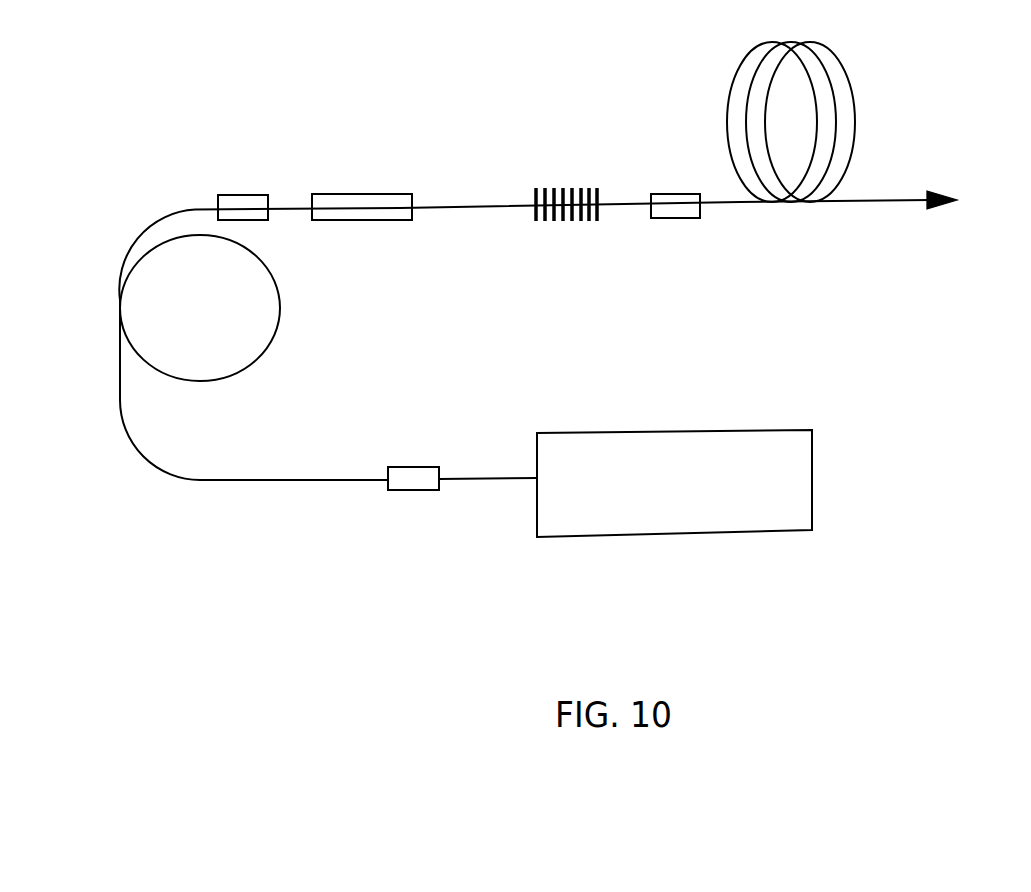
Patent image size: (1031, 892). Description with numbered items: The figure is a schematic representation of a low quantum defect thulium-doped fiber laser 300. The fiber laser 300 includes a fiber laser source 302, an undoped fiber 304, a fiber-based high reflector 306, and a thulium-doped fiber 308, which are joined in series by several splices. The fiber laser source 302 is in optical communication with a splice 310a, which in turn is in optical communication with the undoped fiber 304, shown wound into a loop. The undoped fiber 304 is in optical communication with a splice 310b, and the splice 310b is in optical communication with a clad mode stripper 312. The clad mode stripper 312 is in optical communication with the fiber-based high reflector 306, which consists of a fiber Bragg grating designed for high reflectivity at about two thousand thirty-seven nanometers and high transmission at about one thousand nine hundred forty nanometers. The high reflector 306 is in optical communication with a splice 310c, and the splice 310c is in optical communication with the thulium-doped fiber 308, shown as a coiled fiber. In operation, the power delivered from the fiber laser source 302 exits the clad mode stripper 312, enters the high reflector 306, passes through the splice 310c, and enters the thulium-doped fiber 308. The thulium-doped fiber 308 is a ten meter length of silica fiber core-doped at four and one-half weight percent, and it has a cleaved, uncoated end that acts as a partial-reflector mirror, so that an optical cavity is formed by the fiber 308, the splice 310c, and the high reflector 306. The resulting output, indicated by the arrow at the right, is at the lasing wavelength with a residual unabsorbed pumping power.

The low quantum defect thulium-doped fiber laser 300 is at (914, 56).
The fiber laser source 302 is at (686, 495).
The undoped fiber 304 is at (233, 366).
The fiber-based high reflector 306 is at (563, 187).
The thulium-doped fiber 308 is at (800, 203).
The splice 310a is at (412, 480).
The splice 310b is at (242, 205).
The splice 310c is at (665, 202).
The clad mode stripper 312 is at (363, 193).